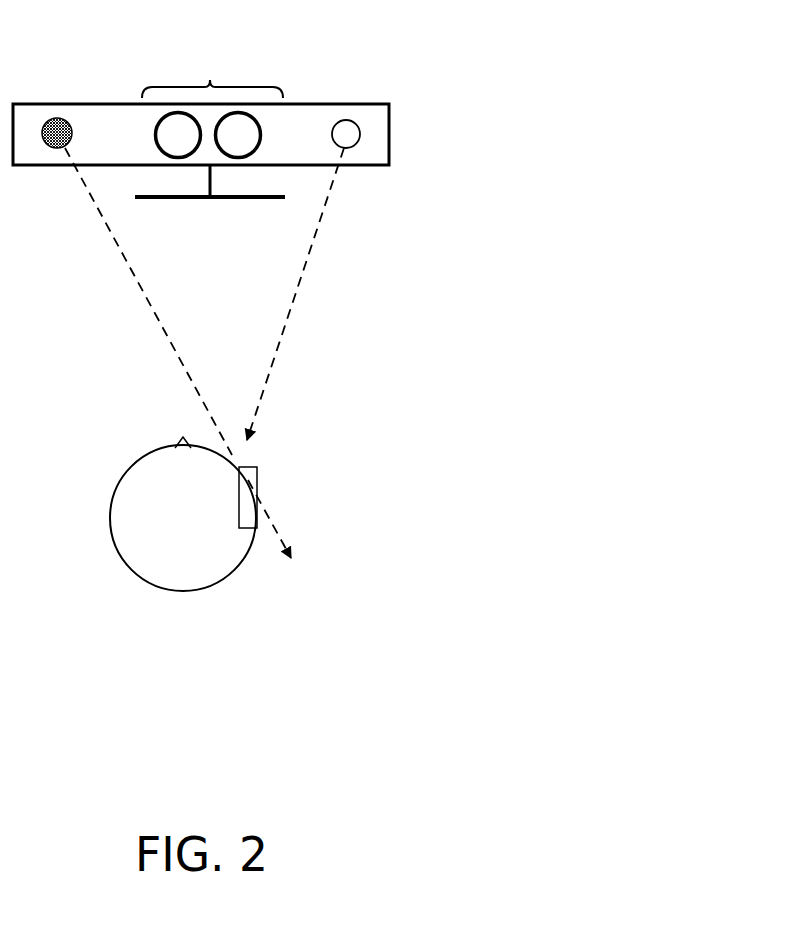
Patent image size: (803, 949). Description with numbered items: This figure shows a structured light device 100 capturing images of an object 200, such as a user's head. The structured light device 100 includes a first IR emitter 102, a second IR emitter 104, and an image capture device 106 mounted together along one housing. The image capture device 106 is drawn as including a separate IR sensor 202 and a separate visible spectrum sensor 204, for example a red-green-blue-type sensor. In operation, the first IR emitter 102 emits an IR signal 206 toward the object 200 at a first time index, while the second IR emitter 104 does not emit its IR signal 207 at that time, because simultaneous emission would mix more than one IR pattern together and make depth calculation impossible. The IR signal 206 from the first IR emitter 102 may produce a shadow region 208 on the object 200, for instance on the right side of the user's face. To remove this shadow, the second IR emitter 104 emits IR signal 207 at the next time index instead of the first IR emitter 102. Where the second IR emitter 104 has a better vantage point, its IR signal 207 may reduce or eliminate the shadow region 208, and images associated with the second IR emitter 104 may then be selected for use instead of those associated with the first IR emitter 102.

The structured light device 100 is at (380, 80).
The first infrared emitter 102 is at (64, 118).
The second infrared emitter 104 is at (360, 134).
The image capture device 106 is at (212, 76).
The object 200 is at (108, 537).
The IR sensor 202 is at (162, 152).
The visible spectrum sensor 204 is at (256, 152).
The IR signal 206 is at (153, 313).
The IR signal 207 is at (300, 284).
The shadow region 208 is at (257, 475).